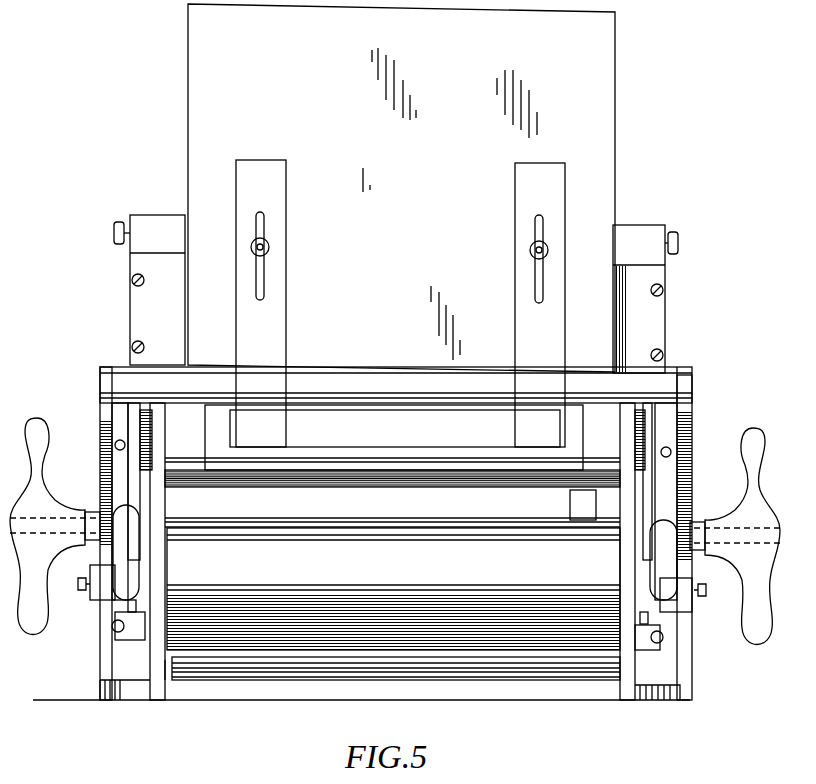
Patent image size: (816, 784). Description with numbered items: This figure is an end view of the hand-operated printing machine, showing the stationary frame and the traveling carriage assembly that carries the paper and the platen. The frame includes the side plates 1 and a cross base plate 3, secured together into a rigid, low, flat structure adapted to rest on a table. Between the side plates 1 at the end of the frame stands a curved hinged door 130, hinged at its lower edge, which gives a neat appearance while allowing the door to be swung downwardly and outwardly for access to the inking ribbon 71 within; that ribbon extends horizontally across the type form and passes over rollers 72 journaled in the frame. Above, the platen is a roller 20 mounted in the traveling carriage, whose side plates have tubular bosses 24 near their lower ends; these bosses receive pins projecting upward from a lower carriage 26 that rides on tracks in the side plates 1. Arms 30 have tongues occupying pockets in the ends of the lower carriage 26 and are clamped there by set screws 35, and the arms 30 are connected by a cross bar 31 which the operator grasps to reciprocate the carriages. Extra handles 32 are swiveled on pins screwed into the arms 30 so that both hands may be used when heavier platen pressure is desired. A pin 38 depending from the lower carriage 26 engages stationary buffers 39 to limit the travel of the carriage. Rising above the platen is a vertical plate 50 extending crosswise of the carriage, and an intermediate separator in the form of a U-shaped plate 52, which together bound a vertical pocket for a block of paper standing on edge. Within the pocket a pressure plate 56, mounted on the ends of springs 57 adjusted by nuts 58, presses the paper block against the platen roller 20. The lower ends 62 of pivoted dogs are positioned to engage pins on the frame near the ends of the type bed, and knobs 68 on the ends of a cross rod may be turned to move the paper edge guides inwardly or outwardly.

The side plate 1 is at (160, 553).
The cross base plate 3 is at (392, 664).
The roller 20 is at (147, 501).
The tubular boss 24 is at (395, 552).
The lower carriage 26 is at (98, 583).
The arm 30 is at (108, 422).
The cross bar 31 is at (396, 385).
The extra handle 32 is at (35, 488).
The set screw 35 is at (698, 595).
The pin 38 is at (128, 612).
The buffer 39 is at (128, 642).
The vertical plate 50 is at (401, 188).
The U-shaped plate 52 is at (397, 294).
The pressure plate 56 is at (392, 437).
The spring 57 is at (400, 303).
The nut 58 is at (269, 248).
The lower end of pivoted dog 62 is at (642, 502).
The knob 68 is at (117, 242).
The inking ribbon 71 is at (392, 498).
The roller 72 is at (561, 505).
The curved hinged door 130 is at (393, 589).